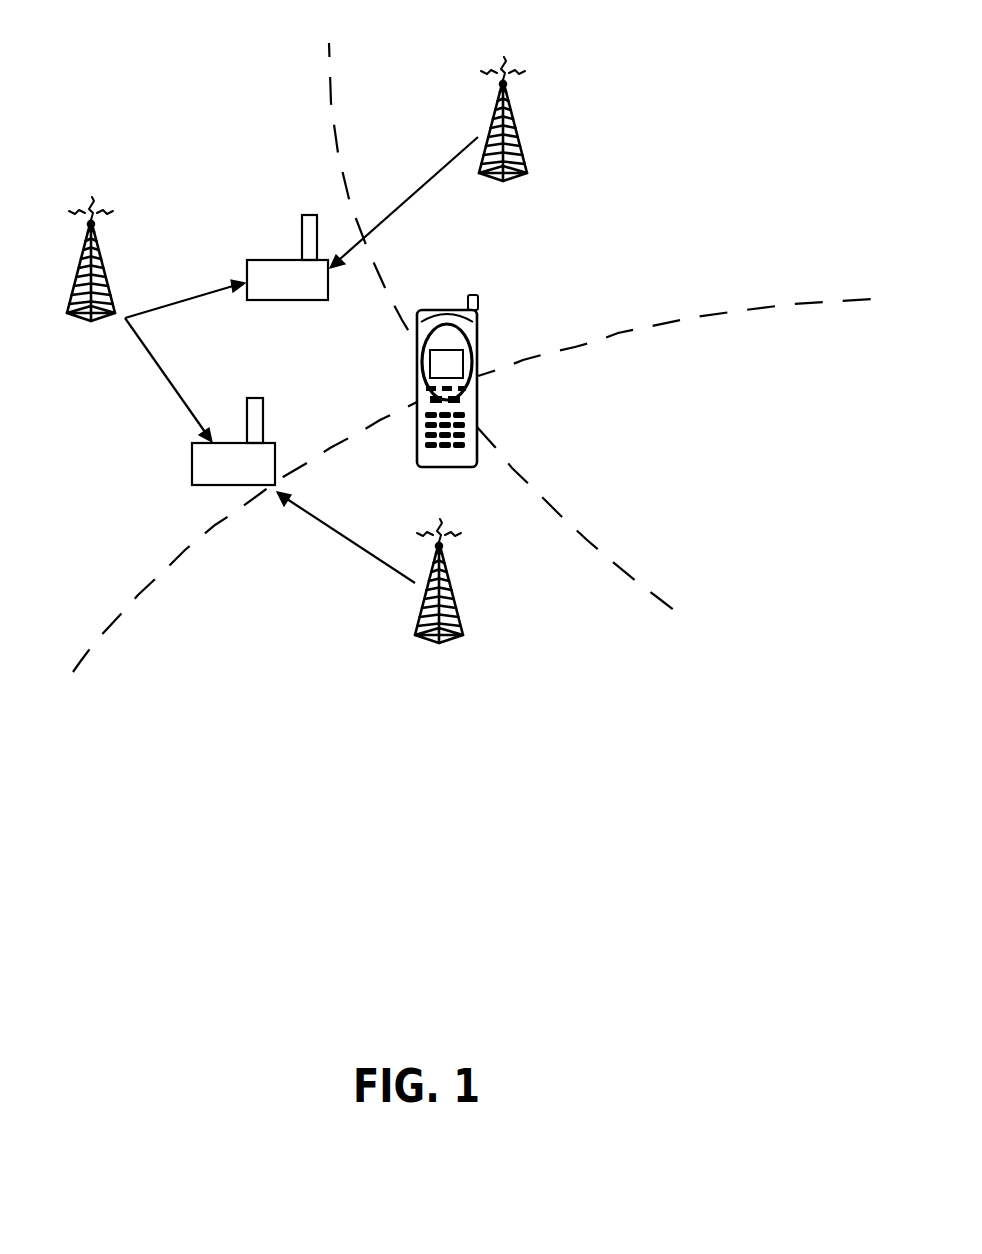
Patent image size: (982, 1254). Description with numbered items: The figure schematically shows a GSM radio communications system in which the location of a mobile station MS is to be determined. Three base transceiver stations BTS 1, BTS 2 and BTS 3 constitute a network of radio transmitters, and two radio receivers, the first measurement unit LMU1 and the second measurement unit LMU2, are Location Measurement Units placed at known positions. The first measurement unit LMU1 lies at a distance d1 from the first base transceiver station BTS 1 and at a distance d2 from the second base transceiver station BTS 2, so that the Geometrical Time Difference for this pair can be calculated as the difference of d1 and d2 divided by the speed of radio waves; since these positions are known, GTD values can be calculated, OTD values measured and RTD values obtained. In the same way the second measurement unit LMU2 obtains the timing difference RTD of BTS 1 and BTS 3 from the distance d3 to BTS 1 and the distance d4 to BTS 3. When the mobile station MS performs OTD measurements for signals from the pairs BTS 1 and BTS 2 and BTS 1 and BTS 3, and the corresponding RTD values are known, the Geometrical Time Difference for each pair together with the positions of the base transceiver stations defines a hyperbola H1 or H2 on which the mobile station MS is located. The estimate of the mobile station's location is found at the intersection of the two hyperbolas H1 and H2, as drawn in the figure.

The first base transceiver station BTS 1 is at (75, 283).
The second base transceiver station BTS 2 is at (447, 602).
The third base transceiver station BTS 3 is at (510, 144).
The first measurement unit LMU1 is at (207, 462).
The second measurement unit LMU2 is at (272, 270).
The mobile station MS is at (468, 403).
The distance of the first base transceiver station to the first measurement unit d1 is at (171, 380).
The distance of the second base transceiver station to the first measurement unit d2 is at (346, 537).
The distance of the first base transceiver station to the second measurement unit d3 is at (185, 303).
The distance of the third base transceiver station to the second measurement unit d4 is at (404, 202).
The hyperbola H1 is at (480, 488).
The hyperbola H2 is at (516, 330).